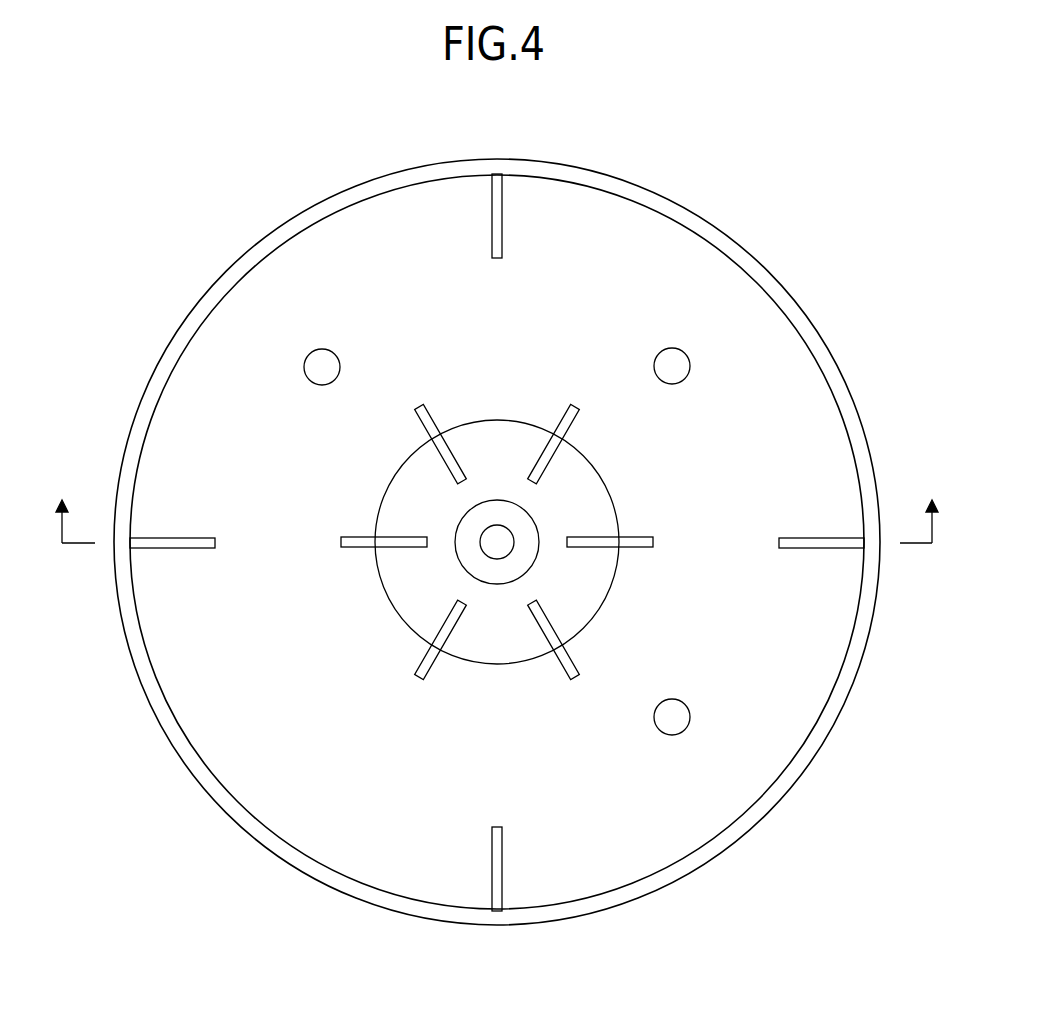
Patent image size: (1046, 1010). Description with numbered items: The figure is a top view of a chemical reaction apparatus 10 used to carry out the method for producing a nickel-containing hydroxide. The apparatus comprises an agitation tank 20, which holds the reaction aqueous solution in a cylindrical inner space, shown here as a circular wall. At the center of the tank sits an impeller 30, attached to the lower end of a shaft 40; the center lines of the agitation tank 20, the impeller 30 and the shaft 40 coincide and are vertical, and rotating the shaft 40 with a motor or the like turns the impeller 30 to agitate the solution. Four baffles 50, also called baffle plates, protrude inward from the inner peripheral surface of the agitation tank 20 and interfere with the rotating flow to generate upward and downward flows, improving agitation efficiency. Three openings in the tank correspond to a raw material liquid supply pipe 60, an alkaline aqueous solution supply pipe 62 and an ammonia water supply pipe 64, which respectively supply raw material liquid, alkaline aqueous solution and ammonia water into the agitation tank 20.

The chemical reaction apparatus 10 is at (232, 248).
The agitation tank 20 is at (183, 333).
The impeller 30 is at (413, 604).
The shaft 40 is at (497, 548).
The baffle 50 is at (495, 214).
The raw material liquid supply pipe 60 is at (322, 367).
The alkaline aqueous solution supply pipe 62 is at (672, 366).
The ammonia water supply pipe 64 is at (672, 717).